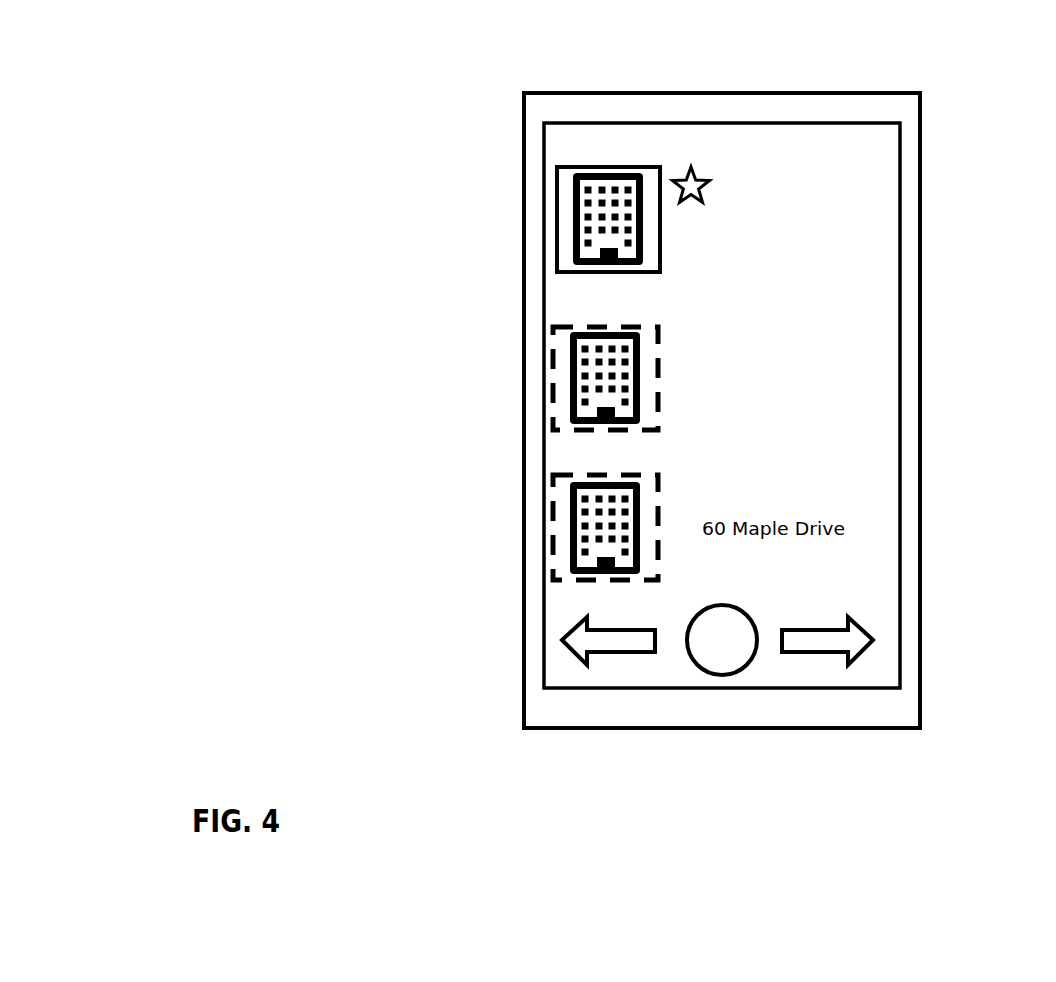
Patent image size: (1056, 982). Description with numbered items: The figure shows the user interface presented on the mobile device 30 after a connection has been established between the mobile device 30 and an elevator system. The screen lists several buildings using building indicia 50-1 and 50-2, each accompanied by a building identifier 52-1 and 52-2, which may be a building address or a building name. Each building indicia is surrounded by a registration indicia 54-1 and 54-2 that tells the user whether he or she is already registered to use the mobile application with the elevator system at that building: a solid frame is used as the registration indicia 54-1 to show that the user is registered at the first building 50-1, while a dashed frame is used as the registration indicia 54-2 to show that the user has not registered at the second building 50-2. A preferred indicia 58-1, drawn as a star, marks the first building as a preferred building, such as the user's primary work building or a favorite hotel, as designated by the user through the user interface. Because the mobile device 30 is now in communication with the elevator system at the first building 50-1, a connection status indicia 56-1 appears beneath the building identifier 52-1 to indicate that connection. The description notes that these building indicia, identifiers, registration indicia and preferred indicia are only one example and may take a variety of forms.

The mobile device 30 is at (923, 140).
The building indicia 50-1 is at (573, 220).
The building indicia 50-2 is at (570, 367).
The building identifier 52-1 is at (832, 233).
The building identifier 52-2 is at (813, 398).
The registration indicia 54-1 is at (557, 257).
The registration indicia 54-2 is at (553, 395).
The connection status indicia 56-1 is at (782, 271).
The preferred indicia 58-1 is at (700, 167).